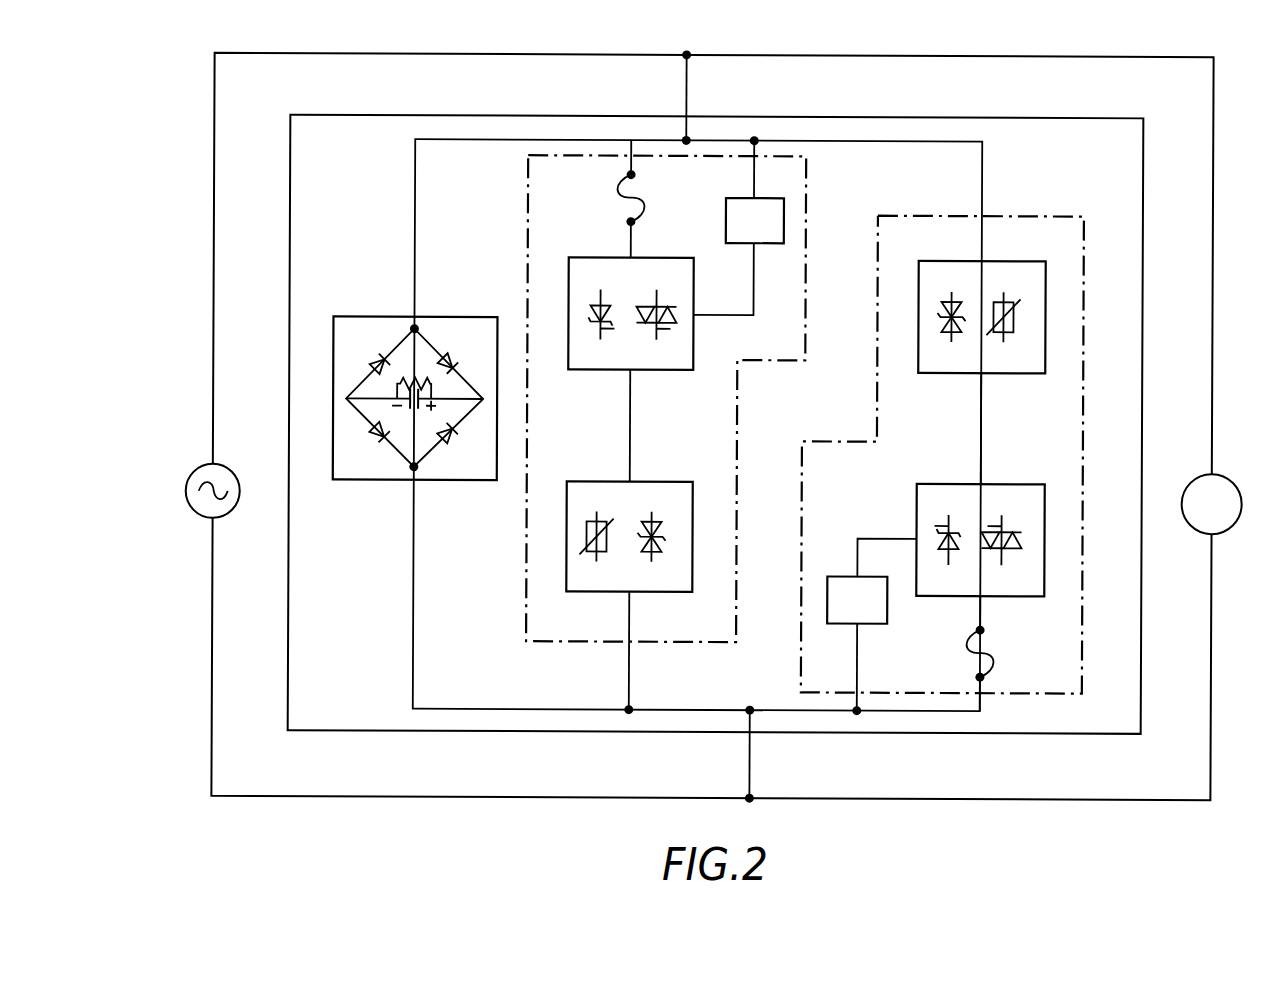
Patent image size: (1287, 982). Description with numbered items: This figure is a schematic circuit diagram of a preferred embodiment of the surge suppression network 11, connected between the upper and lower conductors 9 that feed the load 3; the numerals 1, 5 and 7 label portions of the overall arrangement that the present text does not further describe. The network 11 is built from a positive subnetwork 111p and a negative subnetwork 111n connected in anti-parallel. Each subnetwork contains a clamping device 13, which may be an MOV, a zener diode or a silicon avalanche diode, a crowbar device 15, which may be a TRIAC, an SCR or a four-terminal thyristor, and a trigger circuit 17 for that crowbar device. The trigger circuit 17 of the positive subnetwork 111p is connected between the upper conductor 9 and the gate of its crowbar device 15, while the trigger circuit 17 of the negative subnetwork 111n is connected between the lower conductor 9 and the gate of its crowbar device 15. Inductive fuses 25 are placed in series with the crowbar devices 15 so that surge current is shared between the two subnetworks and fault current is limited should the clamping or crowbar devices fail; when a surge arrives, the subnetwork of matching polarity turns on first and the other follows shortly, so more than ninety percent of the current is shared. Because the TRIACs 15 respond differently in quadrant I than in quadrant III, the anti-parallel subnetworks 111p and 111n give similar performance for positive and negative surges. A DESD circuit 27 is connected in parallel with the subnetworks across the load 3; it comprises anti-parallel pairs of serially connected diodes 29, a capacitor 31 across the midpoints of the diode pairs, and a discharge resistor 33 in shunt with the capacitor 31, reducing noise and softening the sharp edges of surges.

The electrical system 1 is at (1272, 59).
The load 3 is at (1234, 490).
The AC power source 5 is at (196, 476).
The surge suppression circuit 7 is at (163, 170).
The conductor 9 is at (514, 55).
The surge suppression network 11 is at (843, 128).
The clamping device 13 is at (602, 482).
The crowbar device 15 is at (660, 372).
The trigger circuit 17 is at (724, 229).
The inductive fuse 25 is at (628, 196).
The DESD circuit 27 is at (373, 318).
The diode 29 is at (380, 358).
The capacitor 31 is at (414, 417).
The discharge resistor 33 is at (417, 378).
The positive subnetwork 111p is at (546, 643).
The negative subnetwork 111n is at (1020, 215).